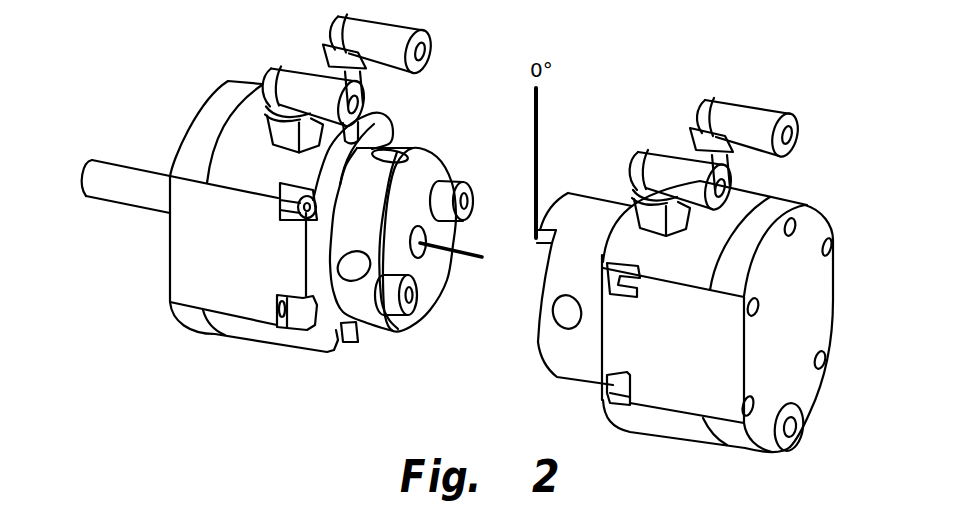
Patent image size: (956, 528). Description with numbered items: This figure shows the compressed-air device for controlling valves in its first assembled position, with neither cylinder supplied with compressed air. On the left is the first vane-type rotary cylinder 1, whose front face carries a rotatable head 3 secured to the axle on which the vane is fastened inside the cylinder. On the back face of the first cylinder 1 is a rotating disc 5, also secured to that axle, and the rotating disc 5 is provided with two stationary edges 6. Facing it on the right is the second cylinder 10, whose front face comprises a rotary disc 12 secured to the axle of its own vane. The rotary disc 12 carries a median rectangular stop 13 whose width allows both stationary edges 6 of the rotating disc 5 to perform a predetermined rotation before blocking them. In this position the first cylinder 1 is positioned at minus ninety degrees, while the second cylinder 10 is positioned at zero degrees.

The first vane-type rotary cylinder 1 is at (245, 268).
The rotatable head 3 is at (125, 187).
The rotating disc 5 is at (433, 270).
The stationary edges 6 is at (470, 188).
The second cylinder 10 is at (690, 375).
The rotary disc 12 is at (560, 335).
The median rectangular stop 13 is at (556, 220).